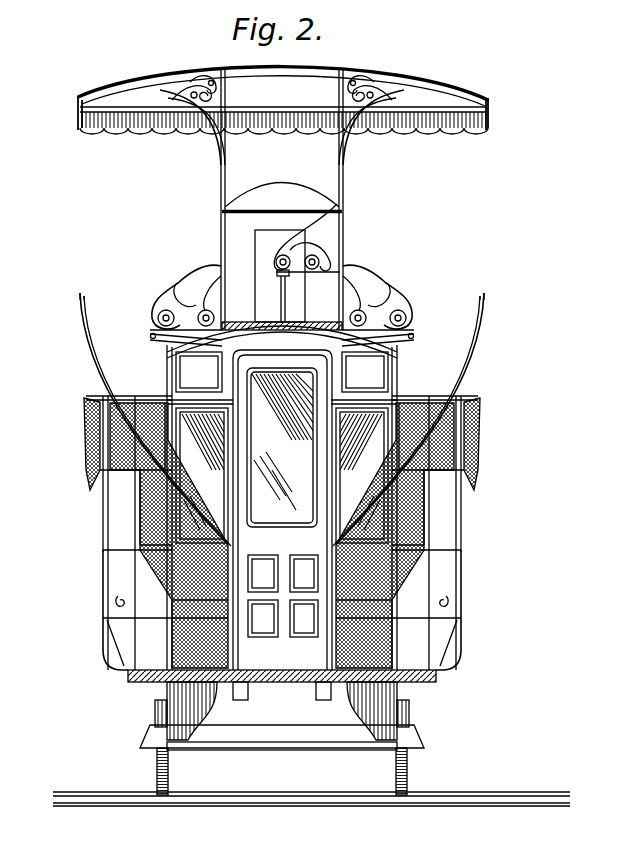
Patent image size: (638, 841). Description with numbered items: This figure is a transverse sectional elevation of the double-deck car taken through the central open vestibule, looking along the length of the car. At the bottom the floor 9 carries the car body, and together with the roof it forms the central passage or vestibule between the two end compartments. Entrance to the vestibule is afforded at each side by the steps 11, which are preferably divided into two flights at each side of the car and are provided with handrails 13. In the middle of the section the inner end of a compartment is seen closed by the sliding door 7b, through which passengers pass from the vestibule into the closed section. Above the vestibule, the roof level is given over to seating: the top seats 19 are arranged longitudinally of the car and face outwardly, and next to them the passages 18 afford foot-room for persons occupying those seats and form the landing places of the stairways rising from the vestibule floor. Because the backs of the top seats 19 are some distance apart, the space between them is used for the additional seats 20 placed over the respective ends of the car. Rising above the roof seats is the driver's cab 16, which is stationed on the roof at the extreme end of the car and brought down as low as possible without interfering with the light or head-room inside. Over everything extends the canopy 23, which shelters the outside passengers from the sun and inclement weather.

The canopy 23 is at (153, 78).
The driver's cab 16 is at (282, 199).
The additional seats 20 is at (299, 263).
The top seats 19 is at (283, 305).
The passages 18 is at (282, 481).
The steps 11 is at (106, 516).
The handrails 13 is at (106, 626).
The sliding doors 7b is at (282, 510).
The floor 9 is at (311, 566).